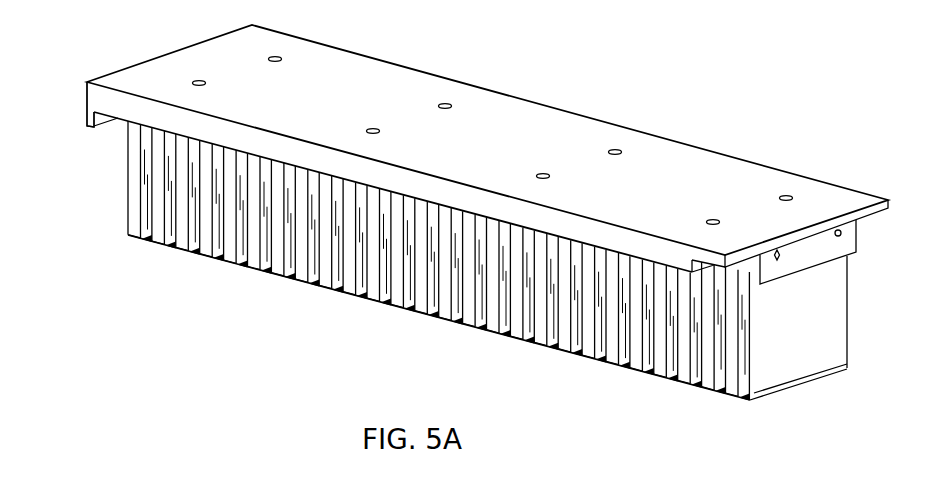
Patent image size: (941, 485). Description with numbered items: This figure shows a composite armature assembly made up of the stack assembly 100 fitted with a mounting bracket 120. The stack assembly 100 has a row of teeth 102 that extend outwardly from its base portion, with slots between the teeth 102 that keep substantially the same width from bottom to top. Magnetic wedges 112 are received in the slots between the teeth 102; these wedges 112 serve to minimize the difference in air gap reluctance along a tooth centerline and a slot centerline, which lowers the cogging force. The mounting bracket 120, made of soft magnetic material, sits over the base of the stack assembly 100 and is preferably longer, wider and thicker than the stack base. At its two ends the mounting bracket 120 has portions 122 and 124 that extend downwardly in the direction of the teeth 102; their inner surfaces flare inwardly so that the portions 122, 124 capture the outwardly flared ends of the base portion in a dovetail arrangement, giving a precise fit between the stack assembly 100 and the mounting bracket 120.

The stack assembly 100 is at (471, 212).
The teeth 102 is at (137, 216).
The magnetic wedges 112 is at (463, 260).
The mounting bracket 120 is at (471, 154).
The downwardly extending portion 122 is at (87, 118).
The downwardly extending portion 124 is at (858, 221).